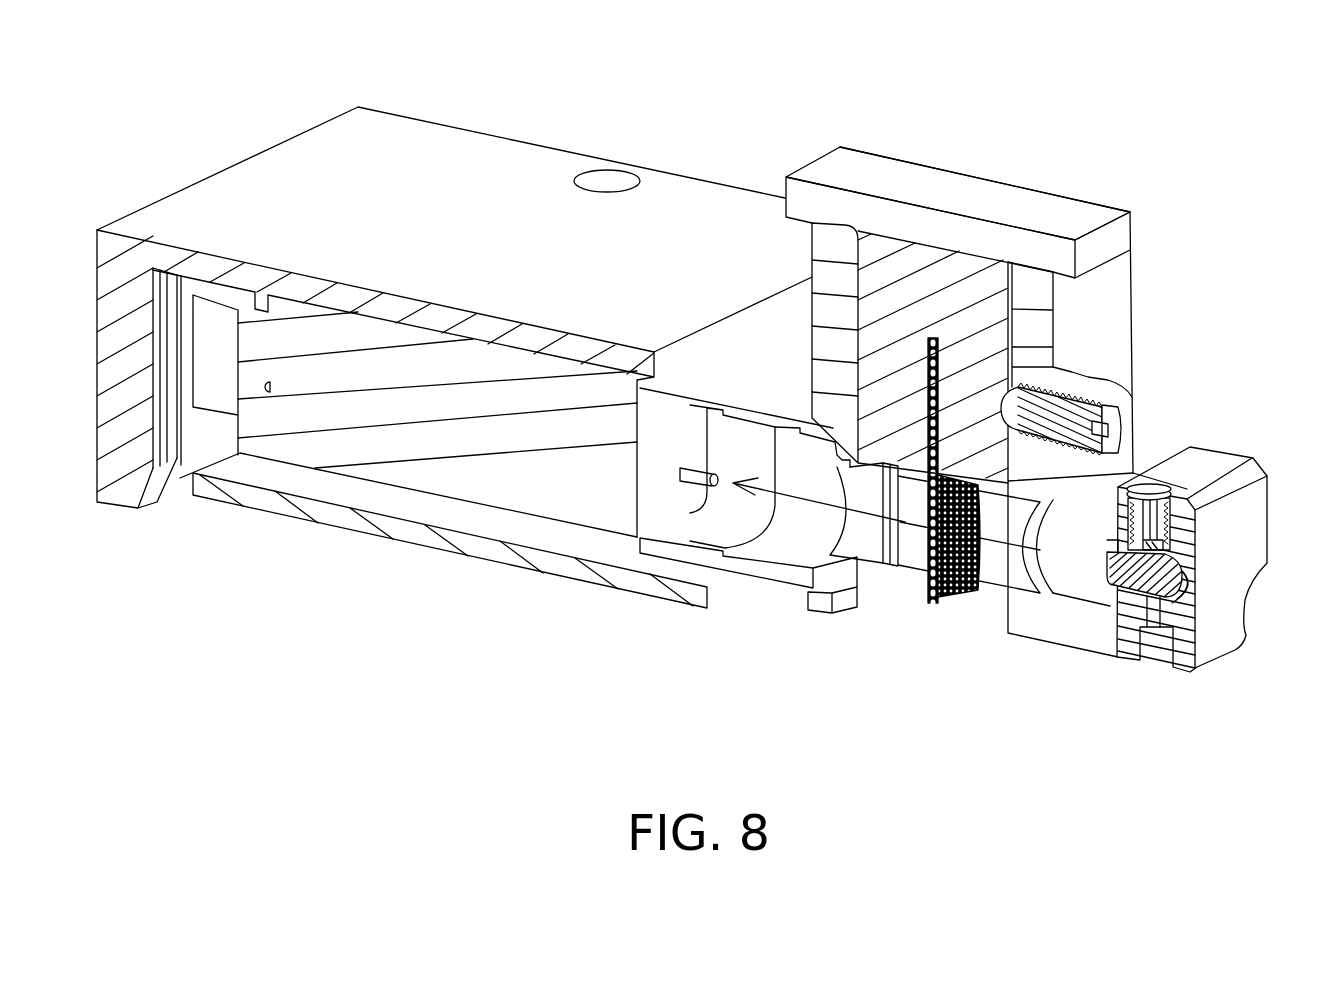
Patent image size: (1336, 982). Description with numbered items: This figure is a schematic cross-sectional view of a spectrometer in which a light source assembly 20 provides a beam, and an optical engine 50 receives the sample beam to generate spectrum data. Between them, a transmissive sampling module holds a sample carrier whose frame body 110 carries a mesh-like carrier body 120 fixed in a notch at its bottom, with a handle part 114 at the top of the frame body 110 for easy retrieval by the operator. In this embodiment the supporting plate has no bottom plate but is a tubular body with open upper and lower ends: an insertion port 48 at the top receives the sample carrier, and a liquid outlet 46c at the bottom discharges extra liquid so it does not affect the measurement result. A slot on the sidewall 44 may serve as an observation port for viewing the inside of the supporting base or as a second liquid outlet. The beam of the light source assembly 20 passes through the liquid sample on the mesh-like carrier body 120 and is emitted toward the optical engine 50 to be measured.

The optical engine 50 is at (463, 138).
The sidewall 44 is at (820, 272).
The handle part 114 is at (1128, 229).
The insertion port 48 is at (1025, 263).
The frame body 110 is at (972, 317).
The light source assembly 20 is at (1234, 460).
The mesh-like carrier body 120 is at (938, 604).
The liquid outlet 46c is at (995, 620).